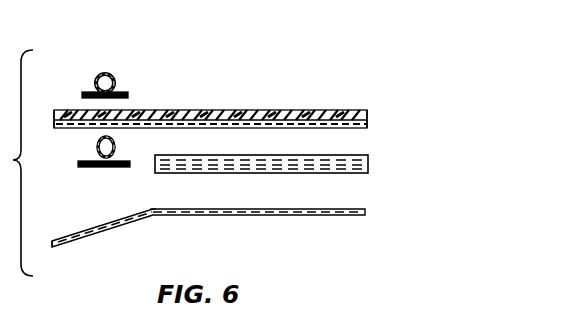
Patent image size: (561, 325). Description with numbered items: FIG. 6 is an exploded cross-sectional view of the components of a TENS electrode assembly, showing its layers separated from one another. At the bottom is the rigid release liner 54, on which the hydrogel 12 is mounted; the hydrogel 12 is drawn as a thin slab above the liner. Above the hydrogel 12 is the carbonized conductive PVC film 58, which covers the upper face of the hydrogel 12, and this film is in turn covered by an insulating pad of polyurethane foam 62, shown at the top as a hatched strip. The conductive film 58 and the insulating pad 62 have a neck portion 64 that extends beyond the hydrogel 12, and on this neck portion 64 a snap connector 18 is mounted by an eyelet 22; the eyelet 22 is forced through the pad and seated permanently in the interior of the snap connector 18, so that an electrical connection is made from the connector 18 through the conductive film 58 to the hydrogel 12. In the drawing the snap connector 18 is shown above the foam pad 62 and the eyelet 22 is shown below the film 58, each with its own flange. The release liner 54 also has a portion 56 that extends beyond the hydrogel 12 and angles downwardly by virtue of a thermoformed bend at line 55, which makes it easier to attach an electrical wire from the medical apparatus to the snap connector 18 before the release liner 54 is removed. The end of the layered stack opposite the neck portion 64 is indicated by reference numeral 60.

The hydrogel 12 is at (218, 170).
The snap connector 18 is at (114, 77).
The eyelet 22 is at (98, 141).
The rigid release liner 54 is at (284, 218).
The line of thermoformed bend 55 is at (153, 218).
The portion of release liner 56 is at (100, 229).
The carbonized conductive PVC film 58 is at (352, 137).
The end portion 60 is at (367, 116).
The insulating pad of polyurethane foam 62 is at (290, 110).
The neck portion 64 is at (53, 113).